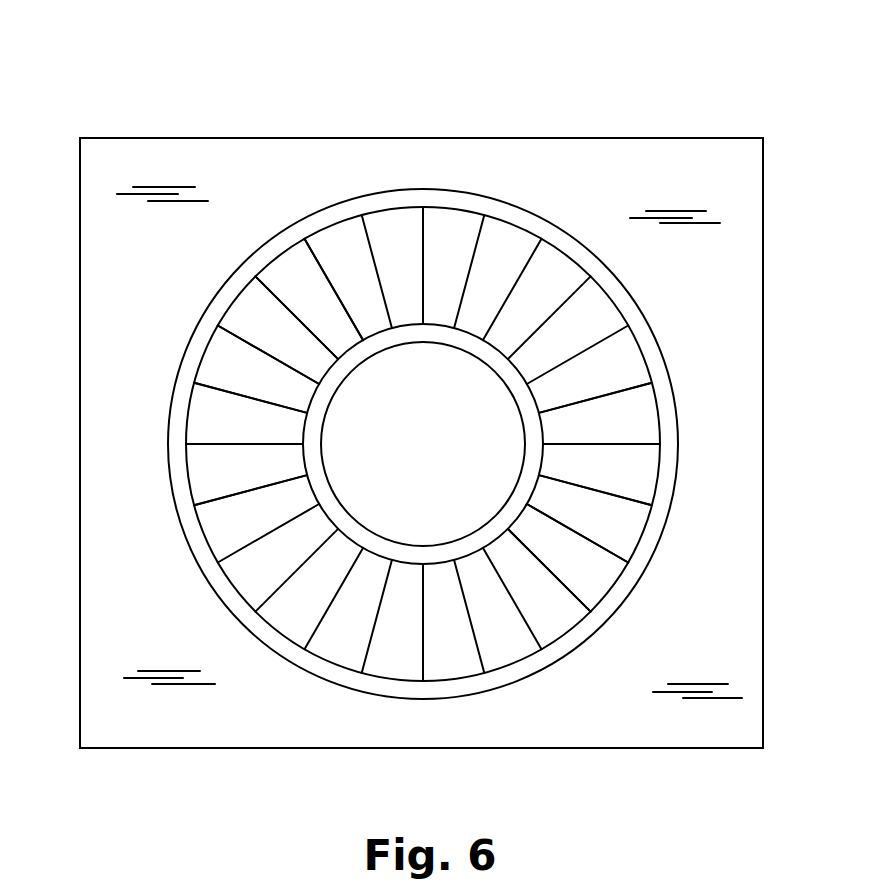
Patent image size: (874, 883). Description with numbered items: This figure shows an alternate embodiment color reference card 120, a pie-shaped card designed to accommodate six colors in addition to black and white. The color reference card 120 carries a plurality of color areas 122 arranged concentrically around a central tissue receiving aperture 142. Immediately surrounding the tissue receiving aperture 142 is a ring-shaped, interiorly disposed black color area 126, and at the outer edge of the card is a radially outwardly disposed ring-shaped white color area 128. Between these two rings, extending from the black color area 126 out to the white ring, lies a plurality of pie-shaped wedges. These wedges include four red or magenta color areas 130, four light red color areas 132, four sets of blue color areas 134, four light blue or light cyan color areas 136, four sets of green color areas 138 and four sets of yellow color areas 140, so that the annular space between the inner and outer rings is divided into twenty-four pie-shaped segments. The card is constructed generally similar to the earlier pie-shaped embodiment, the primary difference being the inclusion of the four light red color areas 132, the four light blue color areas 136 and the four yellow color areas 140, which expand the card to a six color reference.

The color reference card 120 is at (732, 120).
The color areas 122 is at (566, 219).
The black color area 126 is at (310, 437).
The white color area 128 is at (441, 198).
The red (magenta) color areas 130 is at (287, 268).
The light red color areas 132 is at (247, 312).
The blue color areas 134 is at (220, 358).
The light blue color areas 136 is at (207, 420).
The green color areas 138 is at (200, 477).
The yellow color areas 140 is at (340, 242).
The tissue receiving aperture 142 is at (398, 418).